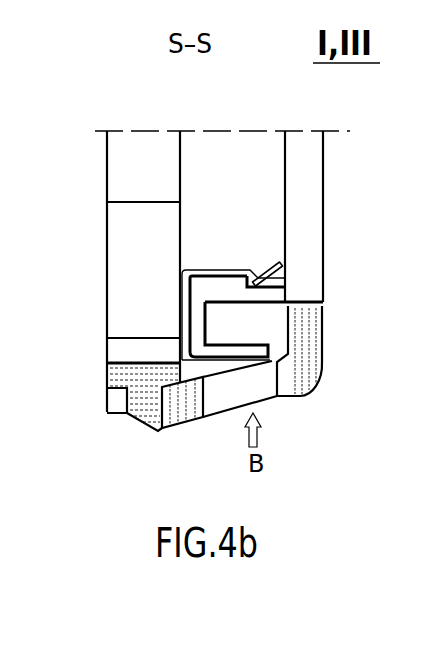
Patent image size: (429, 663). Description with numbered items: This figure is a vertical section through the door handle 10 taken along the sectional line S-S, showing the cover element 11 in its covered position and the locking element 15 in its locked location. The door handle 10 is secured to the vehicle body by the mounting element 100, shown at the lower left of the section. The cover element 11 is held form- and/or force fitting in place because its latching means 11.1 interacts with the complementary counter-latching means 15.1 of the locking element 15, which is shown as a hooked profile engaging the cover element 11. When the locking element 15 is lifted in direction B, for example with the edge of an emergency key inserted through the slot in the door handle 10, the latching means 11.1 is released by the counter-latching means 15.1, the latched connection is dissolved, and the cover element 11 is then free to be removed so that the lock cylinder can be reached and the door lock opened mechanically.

The door handle 10 is at (298, 354).
The cover element 11 is at (322, 225).
The latching means 11.1 is at (230, 288).
The locking element 15 is at (198, 268).
The counter-latching means 15.1 is at (268, 278).
The mounting element 100 is at (122, 375).